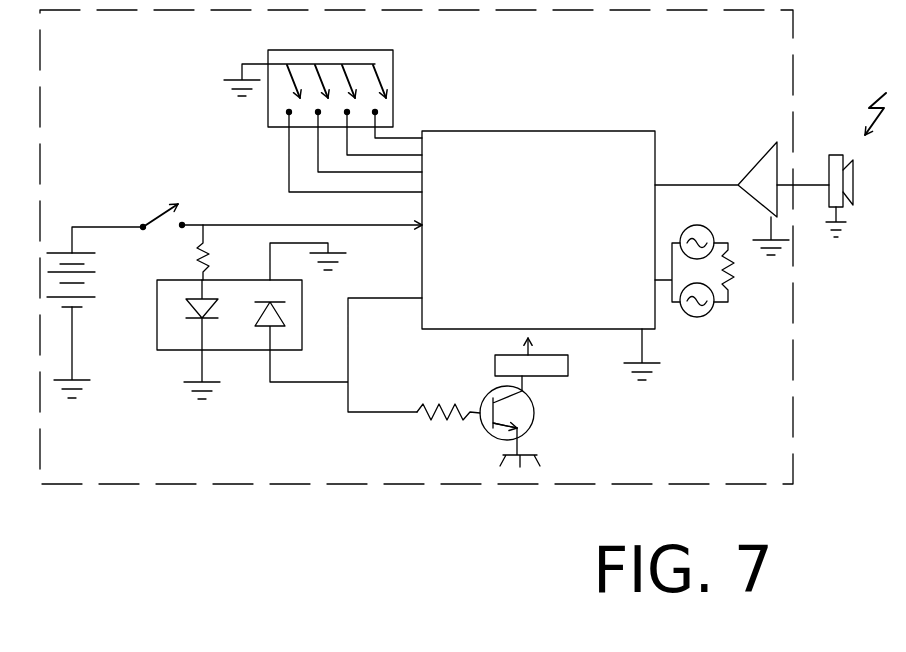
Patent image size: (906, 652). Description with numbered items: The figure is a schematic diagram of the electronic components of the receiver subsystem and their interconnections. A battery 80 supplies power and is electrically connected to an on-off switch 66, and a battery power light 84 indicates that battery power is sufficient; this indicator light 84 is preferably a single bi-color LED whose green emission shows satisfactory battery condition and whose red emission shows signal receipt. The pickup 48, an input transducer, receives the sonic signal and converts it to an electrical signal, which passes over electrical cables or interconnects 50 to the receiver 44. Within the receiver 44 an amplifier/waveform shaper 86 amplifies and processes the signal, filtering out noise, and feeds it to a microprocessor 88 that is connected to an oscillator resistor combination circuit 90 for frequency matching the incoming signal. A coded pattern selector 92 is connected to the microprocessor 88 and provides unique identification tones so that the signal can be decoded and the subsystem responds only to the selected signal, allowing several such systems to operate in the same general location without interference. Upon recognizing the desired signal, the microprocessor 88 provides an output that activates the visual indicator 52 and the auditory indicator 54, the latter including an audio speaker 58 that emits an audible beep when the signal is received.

The receiver 44 is at (776, 471).
The pickup 48 is at (836, 150).
The electrical cables or interconnects 50 is at (810, 190).
The visual indicator 52 is at (263, 332).
The auditory indicator 54 is at (543, 423).
The audio speaker 58 is at (573, 373).
The on-off switch 66 is at (138, 217).
The battery 80 is at (100, 292).
The battery power light 84 is at (180, 332).
The amplifier/waveform shaper 86 is at (752, 152).
The microprocessor 88 is at (632, 315).
The oscillator resistor combination circuit 90 is at (732, 303).
The coded pattern selector 92 is at (403, 88).